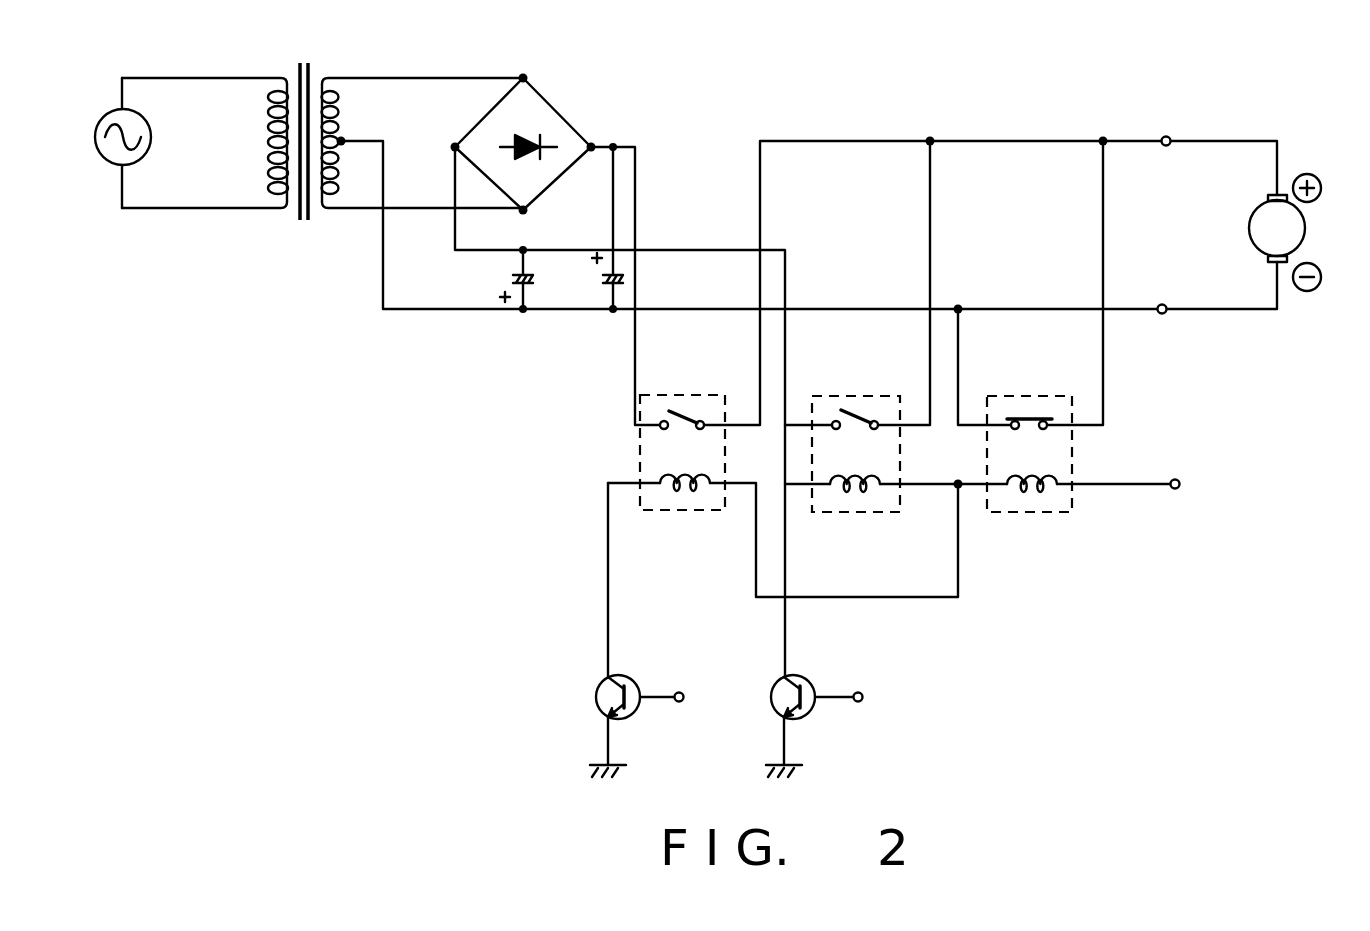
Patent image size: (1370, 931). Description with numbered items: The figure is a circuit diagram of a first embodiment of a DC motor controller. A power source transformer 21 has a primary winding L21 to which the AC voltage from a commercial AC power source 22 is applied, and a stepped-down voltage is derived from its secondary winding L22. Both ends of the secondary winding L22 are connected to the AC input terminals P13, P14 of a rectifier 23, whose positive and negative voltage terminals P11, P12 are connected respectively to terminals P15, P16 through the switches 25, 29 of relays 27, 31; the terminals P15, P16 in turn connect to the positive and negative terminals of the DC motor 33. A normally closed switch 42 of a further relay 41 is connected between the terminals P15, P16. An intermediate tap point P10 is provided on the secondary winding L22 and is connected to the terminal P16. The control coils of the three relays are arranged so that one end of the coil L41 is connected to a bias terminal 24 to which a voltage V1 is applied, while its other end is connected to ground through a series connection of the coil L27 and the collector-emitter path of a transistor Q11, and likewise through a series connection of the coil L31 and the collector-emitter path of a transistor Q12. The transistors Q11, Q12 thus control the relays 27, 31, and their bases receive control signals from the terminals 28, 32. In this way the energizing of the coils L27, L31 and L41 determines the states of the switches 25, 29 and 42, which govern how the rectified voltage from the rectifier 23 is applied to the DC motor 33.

The commercial AC power source 22 is at (106, 118).
The power source transformer 21 is at (304, 224).
The primary winding L21 is at (272, 76).
The secondary winding L22 is at (328, 76).
The intermediate tap point P10 is at (362, 136).
The rectifier 23 is at (470, 157).
The positive voltage terminal P11 is at (593, 142).
The negative voltage terminal P12 is at (455, 142).
The AC input terminal P13 is at (526, 74).
The AC input terminal P14 is at (528, 211).
The terminal P15 is at (1167, 136).
The terminal P16 is at (1162, 304).
The DC motor 33 is at (1302, 244).
The switch 25 is at (686, 414).
The relay 27 is at (645, 456).
The control coil L27 is at (685, 486).
The switch 29 is at (856, 414).
The relay 31 is at (878, 472).
The control coil L31 is at (855, 487).
The normally closed switch 42 is at (1028, 414).
The relay 41 is at (1054, 463).
The control coil L41 is at (1030, 487).
The voltage V1 is at (1172, 518).
The bias terminal 24 is at (1190, 507).
The transistor Q11 is at (597, 698).
The terminal 28 is at (680, 702).
The transistor Q12 is at (810, 683).
The terminal 32 is at (859, 702).